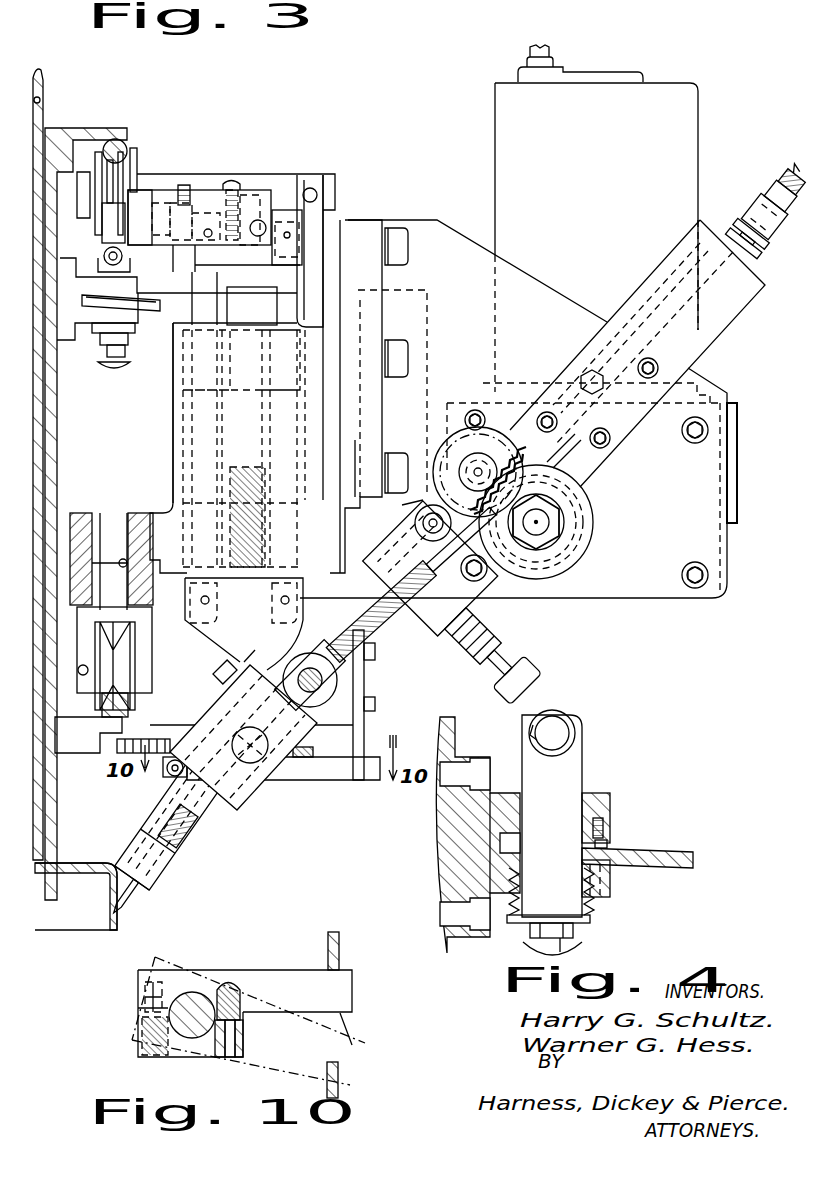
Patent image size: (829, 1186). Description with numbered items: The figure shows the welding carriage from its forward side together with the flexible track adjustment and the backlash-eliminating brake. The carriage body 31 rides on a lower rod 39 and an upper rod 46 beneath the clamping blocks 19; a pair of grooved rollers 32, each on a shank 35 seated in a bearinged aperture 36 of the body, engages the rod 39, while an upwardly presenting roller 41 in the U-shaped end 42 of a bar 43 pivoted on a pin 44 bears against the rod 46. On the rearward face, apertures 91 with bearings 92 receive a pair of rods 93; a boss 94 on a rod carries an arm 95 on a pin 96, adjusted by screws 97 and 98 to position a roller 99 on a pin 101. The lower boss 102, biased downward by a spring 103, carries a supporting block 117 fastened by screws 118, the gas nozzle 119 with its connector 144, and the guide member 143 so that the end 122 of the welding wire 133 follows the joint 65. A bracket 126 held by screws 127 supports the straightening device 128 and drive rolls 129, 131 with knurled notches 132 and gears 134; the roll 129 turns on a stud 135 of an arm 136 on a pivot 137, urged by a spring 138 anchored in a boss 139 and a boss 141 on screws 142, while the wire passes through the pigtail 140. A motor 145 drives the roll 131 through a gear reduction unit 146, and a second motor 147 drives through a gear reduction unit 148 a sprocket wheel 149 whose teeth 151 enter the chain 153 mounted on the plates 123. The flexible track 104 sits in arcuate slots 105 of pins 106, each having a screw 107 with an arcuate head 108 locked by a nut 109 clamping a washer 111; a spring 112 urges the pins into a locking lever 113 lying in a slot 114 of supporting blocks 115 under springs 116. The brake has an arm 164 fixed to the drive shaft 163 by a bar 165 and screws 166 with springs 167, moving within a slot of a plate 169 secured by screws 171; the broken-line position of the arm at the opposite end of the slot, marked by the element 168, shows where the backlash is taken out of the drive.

In FIG. 3, the clamping blocks 19 is at (52, 108).
In FIG. 3, the rod 46 is at (117, 140).
In FIG. 3, the upwardly presenting roller 41 is at (125, 150).
In FIG. 3, the U-shaped end 42 is at (140, 172).
In FIG. 3, the bar 43 is at (207, 173).
In FIG. 3, the screw 97 is at (185, 185).
In FIG. 3, the screw 98 is at (230, 180).
In FIG. 3, the arm 95 is at (248, 195).
In FIG. 3, the pin 96 is at (253, 227).
In FIG. 3, the pin 44 is at (320, 193).
In FIG. 3, the boss 94 is at (302, 220).
In FIG. 3, the screws 127 is at (393, 233).
In FIG. 3, the bracket 126 is at (440, 233).
In FIG. 3, the motor 145 is at (630, 130).
In FIG. 3, the welding wire straightening device 128 is at (673, 260).
In FIG. 3, the roller 99 is at (101, 248).
In FIG. 3, the pin 101 is at (137, 255).
In FIG. 3, the flexible track 104 is at (102, 268).
In FIG. 4, the flexible track 104 is at (550, 713).
In FIG. 3, the rods 93 is at (280, 273).
In FIG. 3, the second motor 147 is at (270, 302).
In FIG. 3, the screw 107 is at (92, 352).
In FIG. 4, the screw 107 is at (570, 937).
In FIG. 3, the bearings 92 is at (193, 368).
In FIG. 3, the arcuate head 108 is at (102, 377).
In FIG. 4, the arcuate head 108 is at (580, 953).
In FIG. 3, the plates 123 is at (58, 430).
In FIG. 3, the apertures 91 is at (273, 415).
In FIG. 3, the body 31 is at (151, 498).
In FIG. 3, the shank 35 is at (103, 513).
In FIG. 3, the bearinged aperture 36 is at (97, 547).
In FIG. 3, the spring 103 is at (280, 552).
In FIG. 3, the roll 129 is at (482, 393).
In FIG. 3, the stud 135 is at (477, 465).
In FIG. 3, the arm 136 is at (420, 478).
In FIG. 3, the pivot 137 is at (418, 518).
In FIG. 3, the gears 134 is at (540, 475).
In FIG. 3, the roll 131 is at (580, 497).
In FIG. 3, the knurled notches 132 is at (575, 532).
In FIG. 3, the gear reduction unit 146 is at (712, 450).
In FIG. 3, the welding wire 133 is at (470, 590).
In FIG. 3, the pigtail 140 is at (353, 620).
In FIG. 3, the boss 139 is at (381, 612).
In FIG. 3, the spring 138 is at (425, 645).
In FIG. 3, the screws 171 is at (376, 655).
In FIG. 3, the boss 141 is at (445, 650).
In FIG. 3, the screws 142 is at (477, 687).
In FIG. 3, the guide member 143 is at (138, 826).
In FIG. 3, the gear reduction unit 148 is at (383, 705).
In FIG. 3, the plate 169 is at (366, 731).
In FIG. 10, the plate 169 is at (340, 957).
In FIG. 3, the grooved rollers 32 is at (120, 642).
In FIG. 3, the boss 102 is at (222, 630).
In FIG. 3, the screws 118 is at (220, 673).
In FIG. 3, the connector 144 is at (264, 710).
In FIG. 3, the rod 39 is at (88, 725).
In FIG. 3, the chain 153 is at (103, 760).
In FIG. 3, the sprocket wheel 149 is at (297, 767).
In FIG. 3, the teeth 151 is at (313, 778).
In FIG. 3, the supporting block 117 is at (233, 806).
In FIG. 3, the gas nozzle 119 is at (194, 857).
In FIG. 3, the joint 65 is at (115, 910).
In FIG. 3, the end of the wire 122 is at (118, 912).
In FIG. 4, the arcuate slots 105 is at (527, 730).
In FIG. 4, the pins 106 is at (570, 770).
In FIG. 4, the supporting blocks 115 is at (617, 793).
In FIG. 4, the slot 114 is at (607, 837).
In FIG. 4, the springs 116 is at (607, 843).
In FIG. 4, the locking lever 113 is at (697, 857).
In FIG. 4, the washer 111 is at (553, 880).
In FIG. 4, the spring 112 is at (590, 903).
In FIG. 4, the nut 109 is at (527, 923).
In FIG. 10, the screws 166 is at (138, 987).
In FIG. 10, the drive shaft 163 is at (187, 993).
In FIG. 10, the arm 164 is at (287, 963).
In FIG. 10, the plate edge 168 is at (353, 1047).
In FIG. 10, the bar 165 is at (187, 1050).
In FIG. 10, the springs 167 is at (247, 1040).